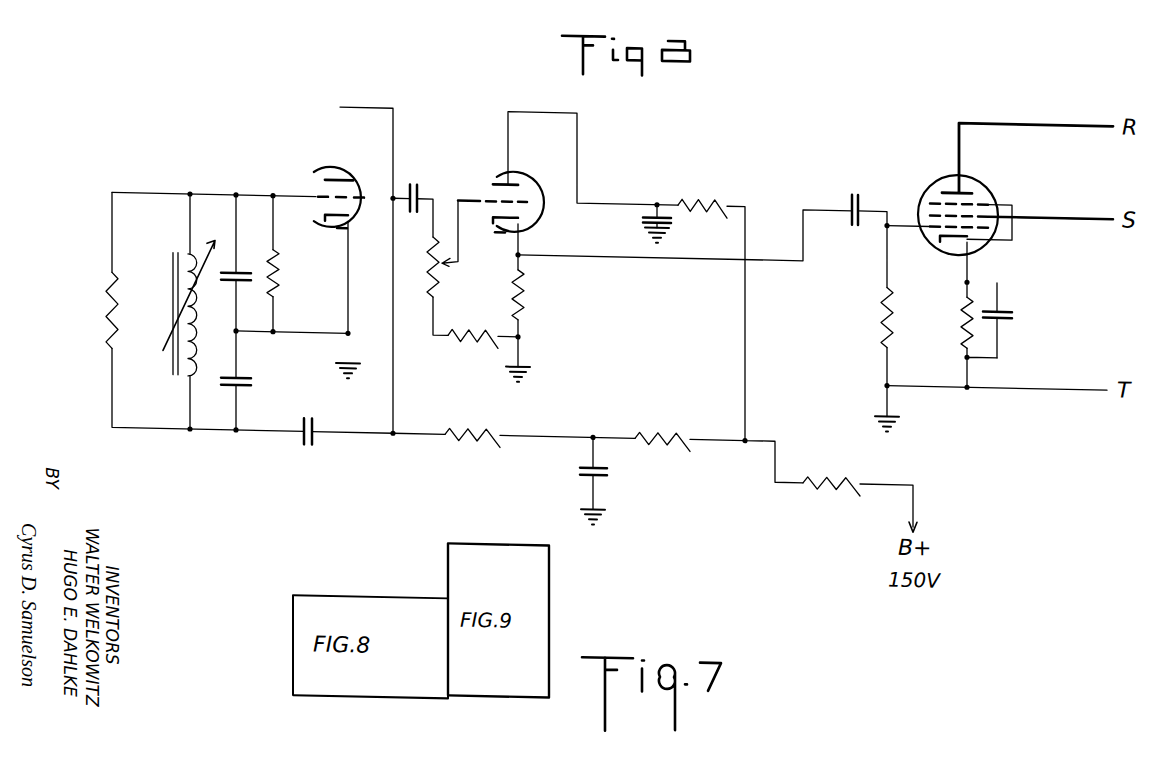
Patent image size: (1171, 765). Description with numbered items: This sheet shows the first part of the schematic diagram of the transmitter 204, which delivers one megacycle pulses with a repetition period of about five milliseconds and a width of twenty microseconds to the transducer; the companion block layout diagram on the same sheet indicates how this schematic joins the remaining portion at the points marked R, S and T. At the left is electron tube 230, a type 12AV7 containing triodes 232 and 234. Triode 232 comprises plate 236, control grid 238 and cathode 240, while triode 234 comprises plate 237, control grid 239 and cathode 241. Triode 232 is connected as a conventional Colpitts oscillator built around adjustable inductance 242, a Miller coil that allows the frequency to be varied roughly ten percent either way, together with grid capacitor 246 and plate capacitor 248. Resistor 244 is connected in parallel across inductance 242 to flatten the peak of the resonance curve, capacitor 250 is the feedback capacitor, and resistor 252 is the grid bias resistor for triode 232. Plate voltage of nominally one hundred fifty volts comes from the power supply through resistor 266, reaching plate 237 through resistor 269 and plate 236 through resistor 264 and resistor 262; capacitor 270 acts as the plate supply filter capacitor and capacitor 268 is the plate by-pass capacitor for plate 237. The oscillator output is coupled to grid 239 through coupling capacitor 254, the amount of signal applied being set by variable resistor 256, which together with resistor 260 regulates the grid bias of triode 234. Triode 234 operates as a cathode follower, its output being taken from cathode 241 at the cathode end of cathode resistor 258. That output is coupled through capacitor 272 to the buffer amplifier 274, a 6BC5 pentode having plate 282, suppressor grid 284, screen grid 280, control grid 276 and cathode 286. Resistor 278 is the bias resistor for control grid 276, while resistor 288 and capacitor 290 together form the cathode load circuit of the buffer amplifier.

The transmitter 204 is at (718, 134).
The electron tube 230 is at (478, 155).
The triode 232 is at (312, 168).
The triode 234 is at (517, 152).
The plate 236 is at (332, 155).
The plate 237 is at (513, 171).
The control grid 238 is at (328, 210).
The control grid 239 is at (539, 205).
The cathode 240 is at (337, 226).
The cathode 241 is at (520, 231).
The adjustable inductance 242 is at (170, 268).
The resistor 244 is at (108, 306).
The grid capacitor 246 is at (257, 263).
The plate capacitor 248 is at (251, 378).
The feedback capacitor 250 is at (305, 446).
The grid bias resistor 252 is at (280, 266).
The coupling capacitor 254 is at (404, 218).
The variable resistor 256 is at (438, 268).
The cathode resistor 258 is at (525, 289).
The resistor 260 is at (470, 331).
The resistor 262 is at (475, 430).
The resistor 264 is at (652, 422).
The resistor 266 is at (820, 473).
The capacitor 268 is at (673, 209).
The resistor 269 is at (710, 185).
The capacitor 270 is at (610, 460).
The capacitor 272 is at (858, 172).
The buffer amplifier 274 is at (943, 157).
The control grid 276 is at (938, 212).
The resistor 278 is at (878, 291).
The screen grid 280 is at (930, 190).
The plate 282 is at (975, 157).
The suppressor grid 284 is at (938, 180).
The cathode 286 is at (948, 224).
The resistor 288 is at (957, 300).
The capacitor 290 is at (1017, 287).